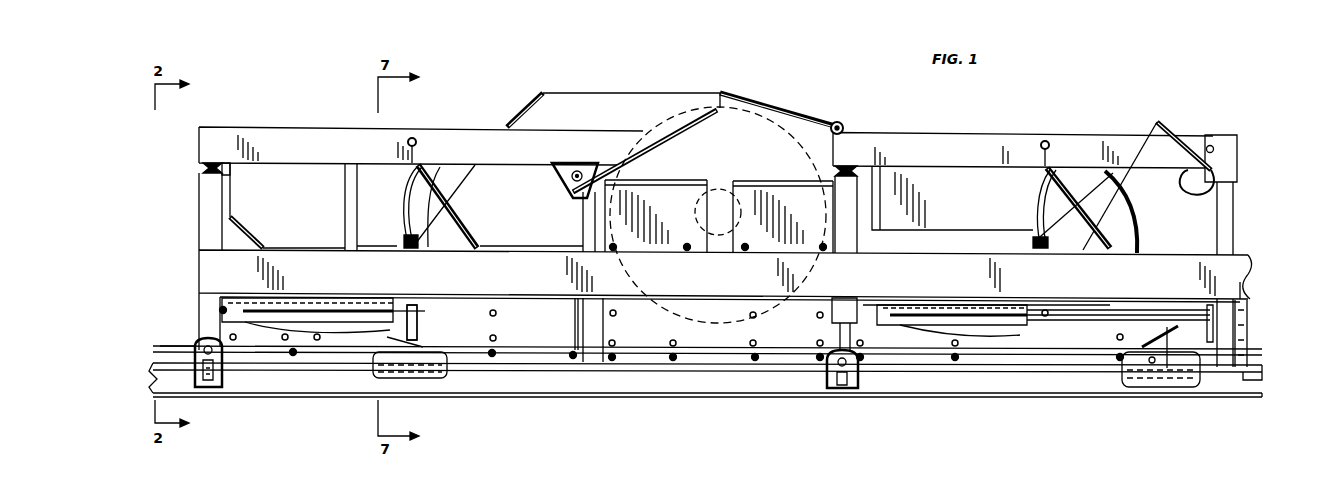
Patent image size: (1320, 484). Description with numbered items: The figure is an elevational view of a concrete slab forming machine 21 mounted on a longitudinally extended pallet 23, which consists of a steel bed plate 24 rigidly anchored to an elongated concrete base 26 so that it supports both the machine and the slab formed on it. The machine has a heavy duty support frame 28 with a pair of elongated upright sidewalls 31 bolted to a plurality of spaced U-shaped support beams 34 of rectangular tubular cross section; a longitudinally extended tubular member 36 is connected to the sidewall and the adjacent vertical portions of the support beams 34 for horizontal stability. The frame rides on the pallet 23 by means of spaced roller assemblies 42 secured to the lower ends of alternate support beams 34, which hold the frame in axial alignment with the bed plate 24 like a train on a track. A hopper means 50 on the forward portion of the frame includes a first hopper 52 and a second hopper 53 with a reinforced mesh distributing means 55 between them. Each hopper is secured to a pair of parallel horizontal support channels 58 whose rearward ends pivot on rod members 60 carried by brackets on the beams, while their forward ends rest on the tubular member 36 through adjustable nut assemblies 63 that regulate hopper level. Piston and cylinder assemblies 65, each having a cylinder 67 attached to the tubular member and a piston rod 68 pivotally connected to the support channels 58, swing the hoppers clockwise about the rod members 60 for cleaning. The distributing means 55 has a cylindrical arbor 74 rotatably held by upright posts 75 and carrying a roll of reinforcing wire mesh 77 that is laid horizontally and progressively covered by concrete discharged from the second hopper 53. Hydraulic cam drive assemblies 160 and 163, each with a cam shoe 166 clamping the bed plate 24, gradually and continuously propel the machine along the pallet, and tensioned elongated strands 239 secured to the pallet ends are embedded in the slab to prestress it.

The concrete slab forming machine 21 is at (985, 132).
The pallet 23 is at (1200, 388).
The bed plate 24 is at (1256, 378).
The concrete base 26 is at (564, 385).
The support frame 28 is at (1240, 255).
The sidewalls 31 is at (783, 337).
The support beams 34 is at (200, 193).
The tubular member 36 is at (1234, 282).
The roller assemblies 42 is at (197, 340).
The hopper means 50 is at (506, 109).
The first hopper 52 is at (227, 165).
The second hopper 53 is at (1160, 120).
The reinforced mesh distributing means 55 is at (654, 162).
The support channels 58 is at (342, 135).
The rod members 60 is at (584, 164).
The adjustable nut assemblies 63 is at (202, 168).
The piston and cylinder assemblies 65 is at (473, 227).
The cylinder 67 is at (442, 164).
The piston rods 68 is at (413, 138).
The cylindrical arbor 74 is at (727, 173).
The upright posts 75 is at (736, 242).
The reinforcing wire mesh 77 is at (760, 117).
The hydraulic cam drive assembly 160 is at (416, 290).
The hydraulic cam drive assembly 163 is at (1030, 304).
The cam shoe 166 is at (430, 347).
The strands 239 is at (177, 345).